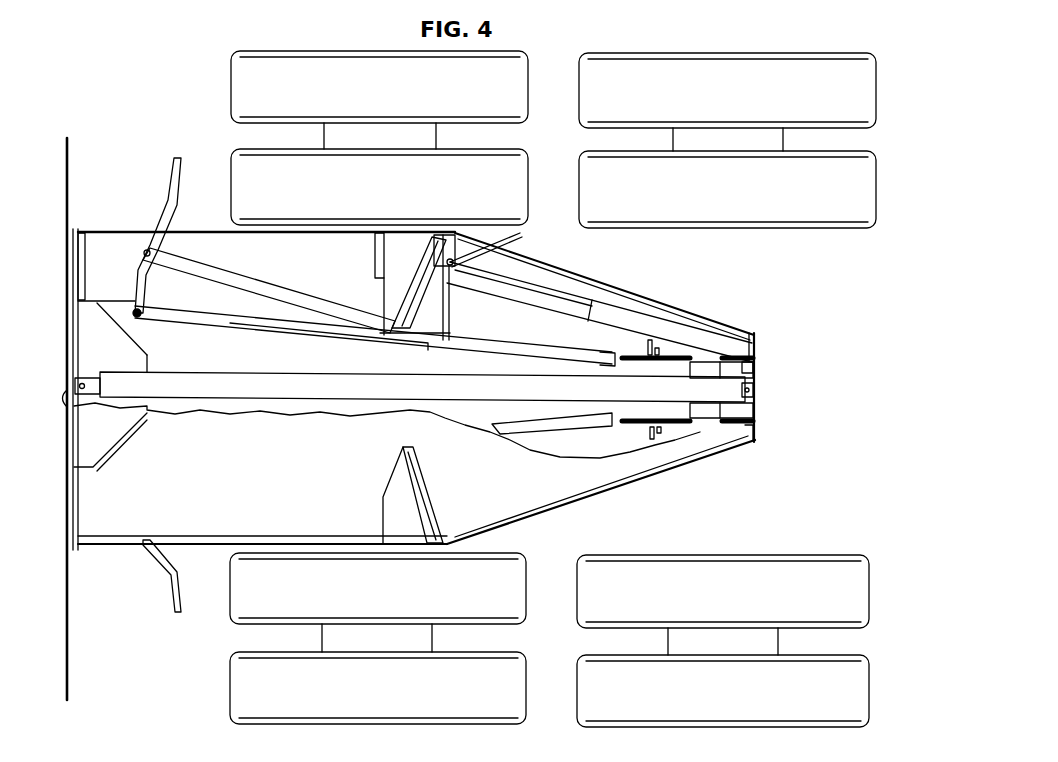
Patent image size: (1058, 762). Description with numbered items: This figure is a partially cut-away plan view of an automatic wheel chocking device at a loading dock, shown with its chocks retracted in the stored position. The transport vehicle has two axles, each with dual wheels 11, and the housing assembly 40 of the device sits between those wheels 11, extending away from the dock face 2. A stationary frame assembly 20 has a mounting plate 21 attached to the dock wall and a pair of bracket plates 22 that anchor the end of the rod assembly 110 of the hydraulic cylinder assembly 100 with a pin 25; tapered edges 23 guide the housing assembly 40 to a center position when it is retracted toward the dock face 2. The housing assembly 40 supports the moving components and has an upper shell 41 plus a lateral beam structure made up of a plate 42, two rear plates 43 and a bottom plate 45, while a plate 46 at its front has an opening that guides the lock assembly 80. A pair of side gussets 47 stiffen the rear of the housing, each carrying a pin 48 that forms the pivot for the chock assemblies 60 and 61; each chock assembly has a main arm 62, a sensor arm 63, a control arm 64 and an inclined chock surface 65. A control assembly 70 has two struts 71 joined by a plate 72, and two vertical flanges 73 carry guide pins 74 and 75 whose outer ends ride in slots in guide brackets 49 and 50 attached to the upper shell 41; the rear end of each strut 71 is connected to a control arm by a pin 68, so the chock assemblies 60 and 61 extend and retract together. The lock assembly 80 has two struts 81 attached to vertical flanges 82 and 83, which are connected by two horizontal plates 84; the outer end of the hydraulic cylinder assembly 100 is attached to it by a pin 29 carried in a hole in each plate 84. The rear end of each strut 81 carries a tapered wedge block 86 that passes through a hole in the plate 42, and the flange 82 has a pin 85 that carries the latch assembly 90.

The dock face 2 is at (69, 580).
The dual wheels 11 is at (233, 152).
The stationary frame assembly 20 is at (72, 232).
The mounting plate 21 is at (416, 359).
The bracket plates 22 is at (148, 362).
The tapered edges 23 is at (133, 343).
The pin 25 is at (72, 405).
The pin 29 is at (755, 392).
The housing assembly 40 is at (655, 277).
The upper shell 41 is at (604, 289).
The plate 42 is at (450, 306).
The rear plates 43 is at (78, 264).
The bottom plate 45 is at (382, 288).
The plate 46 is at (757, 339).
The side gussets 47 is at (227, 320).
The pin 48 is at (151, 254).
The guide bracket 49 is at (650, 340).
The guide bracket 50 is at (630, 434).
The chock assembly 60 is at (455, 235).
The chock assembly 61 is at (442, 523).
The main arm 62 is at (236, 290).
The sensor arm 63 is at (173, 160).
The control arm 64 is at (142, 304).
The inclined chock surface 65 is at (423, 245).
The pin 68 is at (136, 313).
The control assembly 70 is at (553, 340).
The struts 71 is at (587, 340).
The plate 72 is at (608, 325).
The vertical flanges 73 is at (590, 435).
The guide pin 74 is at (690, 354).
The guide pin 75 is at (656, 438).
The lock assembly 80 is at (760, 334).
The struts 81 is at (547, 287).
The vertical flange 82 is at (755, 357).
The vertical flange 83 is at (750, 425).
The horizontal plates 84 is at (755, 410).
The pin 85 is at (755, 374).
The tapered wedge block 86 is at (506, 239).
The latch assembly 90 is at (718, 337).
The hydraulic cylinder assembly 100 is at (317, 372).
The rod assembly 110 is at (90, 376).